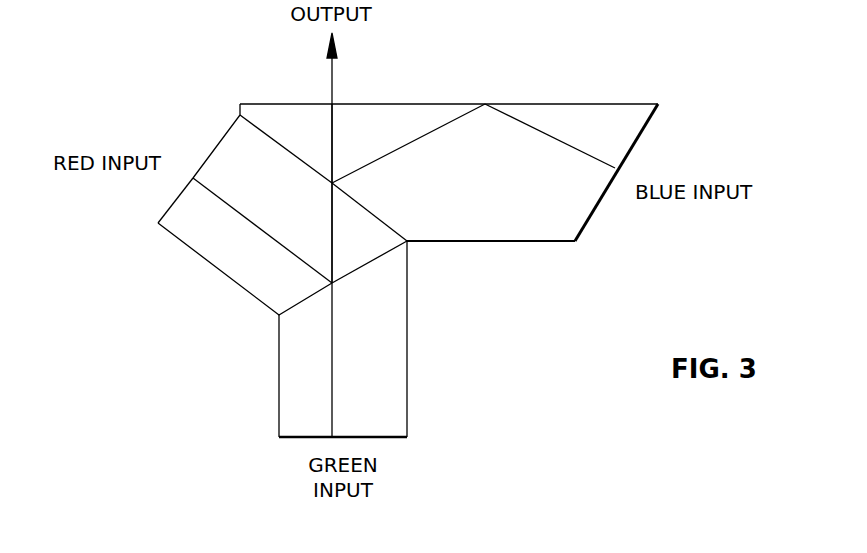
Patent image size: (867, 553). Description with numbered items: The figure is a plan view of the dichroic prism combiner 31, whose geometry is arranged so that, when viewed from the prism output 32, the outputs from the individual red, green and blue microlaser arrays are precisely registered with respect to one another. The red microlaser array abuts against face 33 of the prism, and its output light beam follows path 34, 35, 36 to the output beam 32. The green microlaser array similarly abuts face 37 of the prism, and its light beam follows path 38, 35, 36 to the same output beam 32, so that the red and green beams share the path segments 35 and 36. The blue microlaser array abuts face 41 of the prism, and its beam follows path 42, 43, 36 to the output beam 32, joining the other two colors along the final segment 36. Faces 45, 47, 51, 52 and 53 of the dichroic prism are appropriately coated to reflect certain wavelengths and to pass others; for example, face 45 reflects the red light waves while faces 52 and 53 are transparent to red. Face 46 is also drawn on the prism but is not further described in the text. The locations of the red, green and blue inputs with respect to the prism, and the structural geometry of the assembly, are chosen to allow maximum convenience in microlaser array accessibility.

The dichroic prism combiner 31 is at (385, 88).
The prism output 32 is at (330, 77).
The face 33 is at (212, 148).
The path 34 is at (230, 205).
The path 35 is at (330, 210).
The path 36 is at (333, 122).
The face 37 is at (290, 438).
The path 38 is at (333, 386).
The face 41 is at (586, 226).
The path 42 is at (583, 154).
The path 43 is at (426, 138).
The face 45 is at (310, 296).
The central prism lower surface 46 is at (370, 262).
The face 47 is at (618, 105).
The face 51 is at (383, 212).
The face 52 is at (358, 203).
The face 53 is at (310, 106).